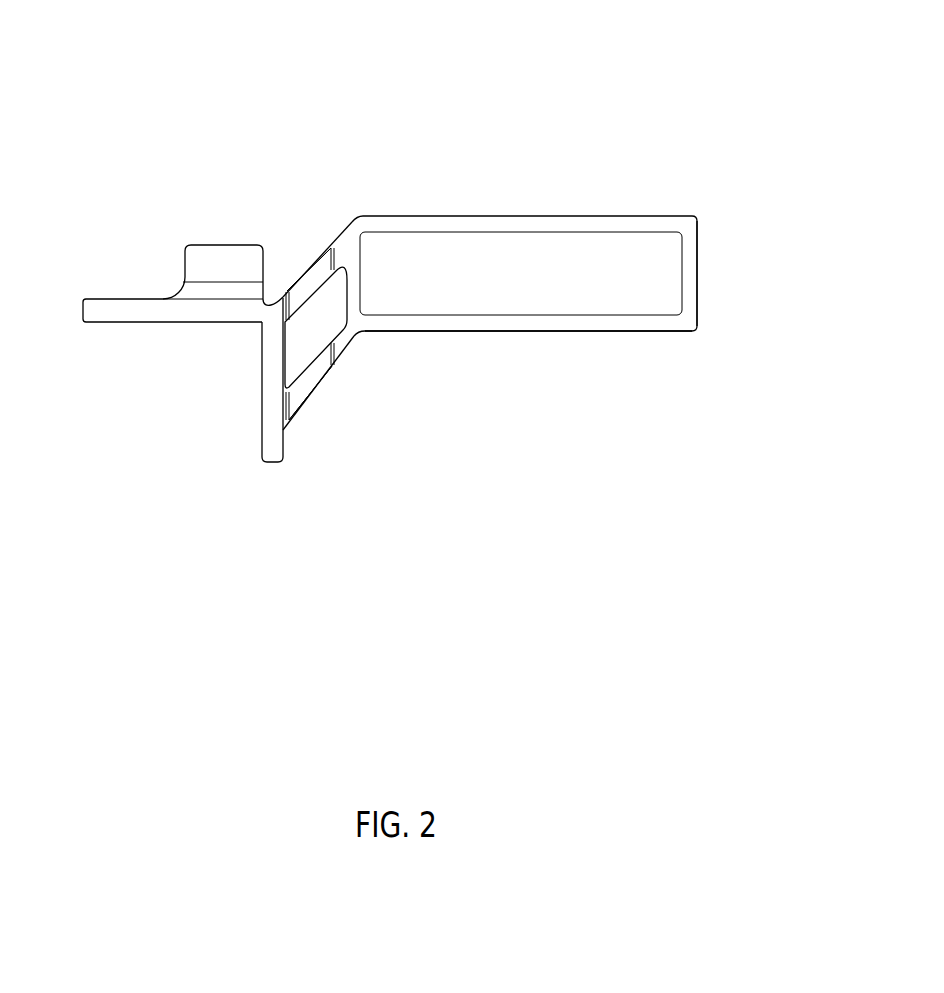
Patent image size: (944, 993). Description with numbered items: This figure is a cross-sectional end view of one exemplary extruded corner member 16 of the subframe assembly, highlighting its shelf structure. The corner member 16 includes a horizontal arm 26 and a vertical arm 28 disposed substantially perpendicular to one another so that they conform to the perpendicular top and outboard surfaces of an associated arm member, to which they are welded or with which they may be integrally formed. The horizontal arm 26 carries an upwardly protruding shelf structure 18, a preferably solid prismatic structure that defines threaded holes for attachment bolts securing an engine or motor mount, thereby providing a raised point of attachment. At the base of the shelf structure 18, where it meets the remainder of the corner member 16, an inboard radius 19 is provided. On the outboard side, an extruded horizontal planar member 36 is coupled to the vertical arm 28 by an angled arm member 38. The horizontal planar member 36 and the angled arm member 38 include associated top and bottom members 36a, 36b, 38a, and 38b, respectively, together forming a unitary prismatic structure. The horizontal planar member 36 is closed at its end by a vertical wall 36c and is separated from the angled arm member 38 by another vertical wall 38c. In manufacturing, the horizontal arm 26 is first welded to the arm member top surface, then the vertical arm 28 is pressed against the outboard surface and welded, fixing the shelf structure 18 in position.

The corner member 16 is at (273, 219).
The shelf structure 18 is at (223, 237).
The inboard radius 19 is at (173, 281).
The horizontal arm 26 is at (123, 290).
The vertical arm 28 is at (259, 383).
The horizontal planar member 36 is at (605, 278).
The top member of horizontal planar member 36a is at (455, 240).
The bottom member of horizontal planar member 36b is at (588, 333).
The vertical wall 36c is at (702, 302).
The angled arm member 38 is at (388, 320).
The top member of angled arm member 38a is at (313, 301).
The bottom member of angled arm member 38b is at (313, 393).
The vertical wall 38c is at (362, 290).